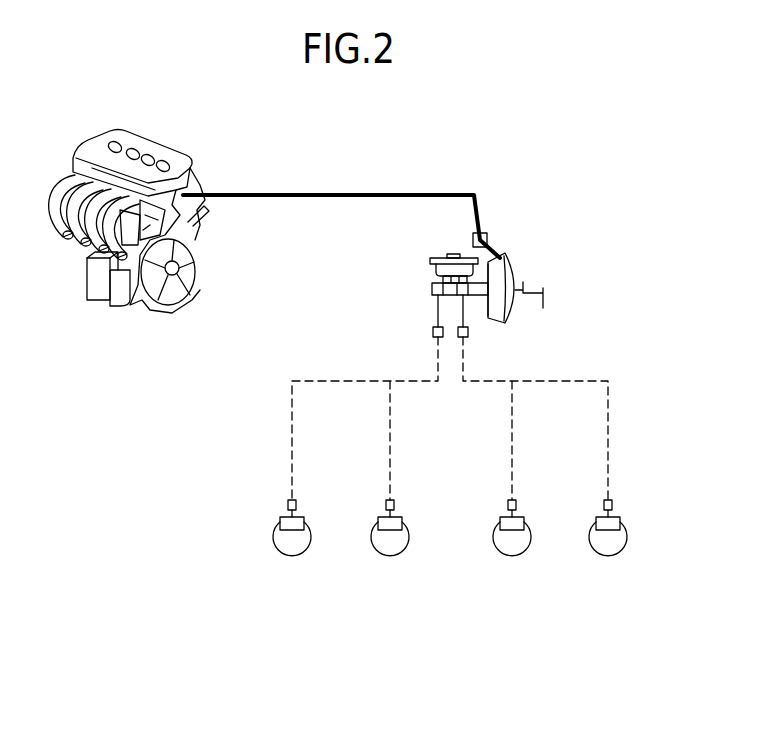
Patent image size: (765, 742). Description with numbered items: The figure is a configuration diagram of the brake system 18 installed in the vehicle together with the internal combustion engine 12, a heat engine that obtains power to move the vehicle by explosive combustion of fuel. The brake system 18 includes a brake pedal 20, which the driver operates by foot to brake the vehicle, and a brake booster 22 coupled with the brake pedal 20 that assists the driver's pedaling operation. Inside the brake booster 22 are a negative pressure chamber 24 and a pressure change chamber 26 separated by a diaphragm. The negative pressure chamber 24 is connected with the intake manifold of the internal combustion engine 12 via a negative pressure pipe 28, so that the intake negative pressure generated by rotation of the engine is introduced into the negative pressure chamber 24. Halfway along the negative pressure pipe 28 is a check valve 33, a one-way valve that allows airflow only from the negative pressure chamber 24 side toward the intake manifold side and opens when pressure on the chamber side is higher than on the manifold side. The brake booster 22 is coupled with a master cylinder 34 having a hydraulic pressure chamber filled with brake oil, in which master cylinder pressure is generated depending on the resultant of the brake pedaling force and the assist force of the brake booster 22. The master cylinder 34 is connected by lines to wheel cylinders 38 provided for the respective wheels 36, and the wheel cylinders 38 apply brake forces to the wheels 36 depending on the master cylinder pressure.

The internal combustion engine 12 is at (92, 258).
The brake system 18 is at (609, 303).
The brake pedal 20 is at (532, 291).
The brake booster 22 is at (511, 318).
The negative pressure chamber 24 is at (495, 308).
The pressure change chamber 26 is at (510, 268).
The negative pressure pipe 28 is at (395, 193).
The check valve 33 is at (488, 227).
The master cylinder 34 is at (432, 288).
The wheels 36 is at (292, 556).
The wheel cylinders 38 is at (288, 505).